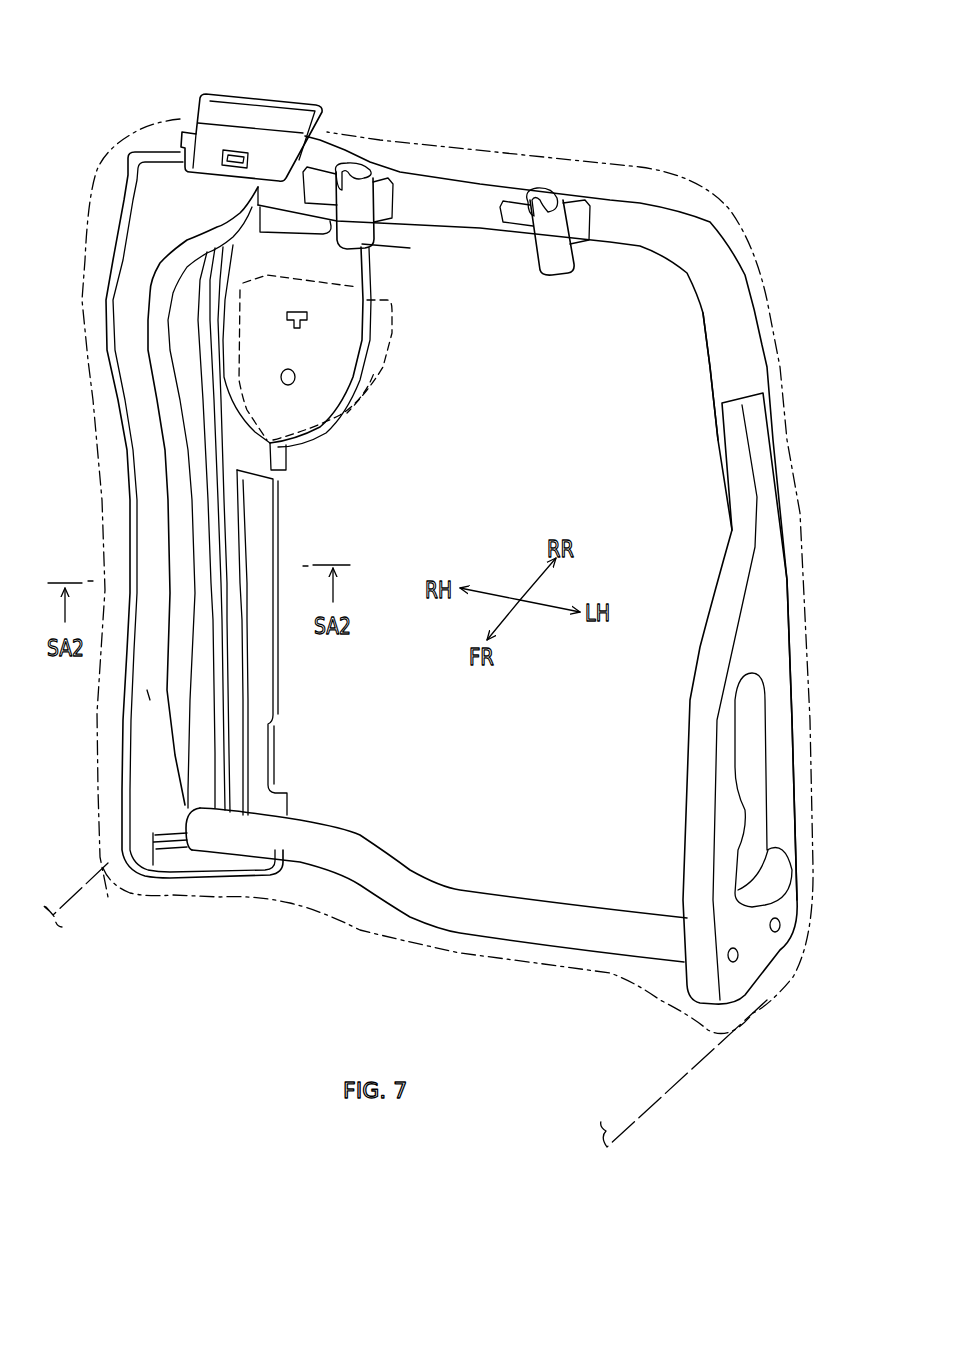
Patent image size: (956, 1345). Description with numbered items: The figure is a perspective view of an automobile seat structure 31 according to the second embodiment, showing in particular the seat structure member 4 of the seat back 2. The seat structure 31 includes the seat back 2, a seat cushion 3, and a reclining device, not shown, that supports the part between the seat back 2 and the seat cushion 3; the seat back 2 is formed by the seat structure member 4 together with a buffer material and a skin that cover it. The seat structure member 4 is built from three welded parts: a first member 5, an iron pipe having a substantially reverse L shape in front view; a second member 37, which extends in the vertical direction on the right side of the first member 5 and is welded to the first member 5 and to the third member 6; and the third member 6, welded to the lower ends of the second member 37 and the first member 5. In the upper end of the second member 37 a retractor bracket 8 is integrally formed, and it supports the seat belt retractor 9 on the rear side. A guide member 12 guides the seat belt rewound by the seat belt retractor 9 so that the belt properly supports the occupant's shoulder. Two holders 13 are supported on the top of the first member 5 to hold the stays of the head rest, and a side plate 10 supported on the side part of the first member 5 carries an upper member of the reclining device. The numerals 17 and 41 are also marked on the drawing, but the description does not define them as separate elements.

The seat back 2 is at (765, 270).
The seat cushion 3 is at (102, 872).
The seat structure member 4 is at (750, 320).
The first member 5 is at (740, 367).
The third member 6 is at (508, 908).
The retractor bracket 8 is at (330, 368).
The seat belt retractor 9 is at (390, 340).
The side plate 10 is at (747, 665).
The guide member 12 is at (285, 93).
The holder 13 is at (390, 248).
The side frame 17 is at (281, 636).
The automobile seat structure 31 is at (736, 199).
The second member 37 is at (145, 695).
The flange 41 is at (255, 530).